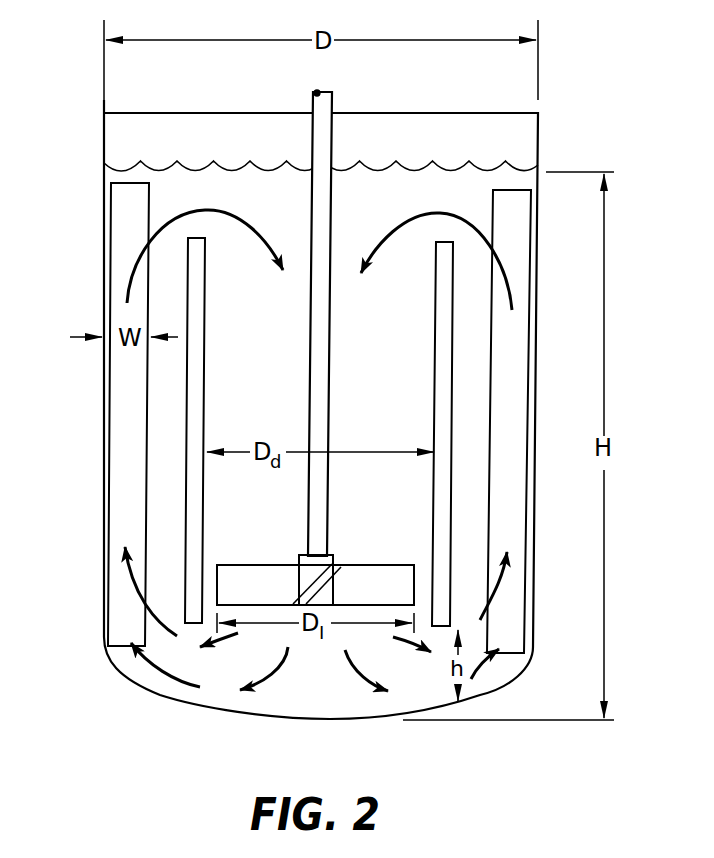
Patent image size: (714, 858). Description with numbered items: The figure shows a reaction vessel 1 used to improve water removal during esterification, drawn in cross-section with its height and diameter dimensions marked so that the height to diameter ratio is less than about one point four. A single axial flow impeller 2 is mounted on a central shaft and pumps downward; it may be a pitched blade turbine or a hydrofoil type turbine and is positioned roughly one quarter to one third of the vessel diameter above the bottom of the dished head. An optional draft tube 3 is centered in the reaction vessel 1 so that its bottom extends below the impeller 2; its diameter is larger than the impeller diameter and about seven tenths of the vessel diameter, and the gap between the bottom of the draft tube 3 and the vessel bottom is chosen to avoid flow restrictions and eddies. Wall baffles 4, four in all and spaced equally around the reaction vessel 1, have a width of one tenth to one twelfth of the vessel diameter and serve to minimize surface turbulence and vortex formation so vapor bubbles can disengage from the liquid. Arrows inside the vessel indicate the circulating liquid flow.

The reaction vessel 1 is at (76, 236).
The axial flow impeller 2 is at (264, 564).
The draft tube 3 is at (205, 325).
The wall baffles 4 is at (120, 603).